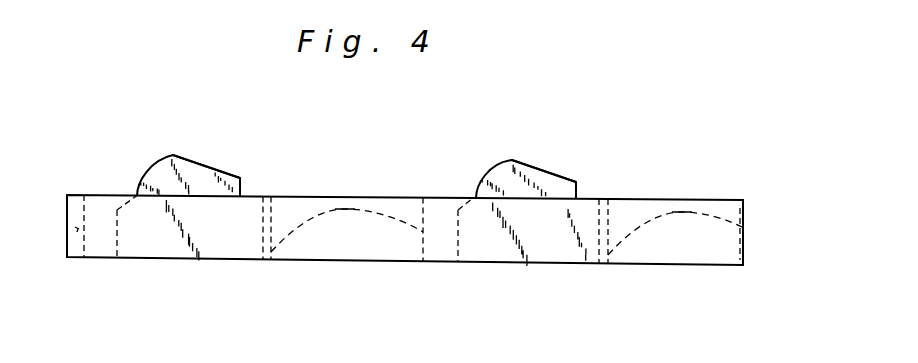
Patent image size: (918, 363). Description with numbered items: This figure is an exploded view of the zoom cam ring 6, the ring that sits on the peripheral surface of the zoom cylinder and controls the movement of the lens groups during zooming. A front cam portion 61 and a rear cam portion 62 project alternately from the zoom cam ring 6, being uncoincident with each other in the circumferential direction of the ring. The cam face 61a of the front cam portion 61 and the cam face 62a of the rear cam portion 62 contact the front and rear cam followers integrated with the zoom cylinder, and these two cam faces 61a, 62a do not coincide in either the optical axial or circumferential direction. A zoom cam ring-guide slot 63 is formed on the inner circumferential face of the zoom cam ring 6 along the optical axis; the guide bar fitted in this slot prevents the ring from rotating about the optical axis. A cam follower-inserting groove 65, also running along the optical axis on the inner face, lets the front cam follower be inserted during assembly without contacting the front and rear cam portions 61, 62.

The zoom cam ring 6 is at (532, 242).
The front cam portion 61 is at (157, 153).
The cam face of the front cam portion 61a is at (182, 153).
The rear cam portion 62 is at (395, 228).
The cam face of the rear cam portion 62a is at (340, 210).
The zoom cam ring-guide slot 63 is at (271, 215).
The cam follower-inserting groove 65 is at (100, 210).